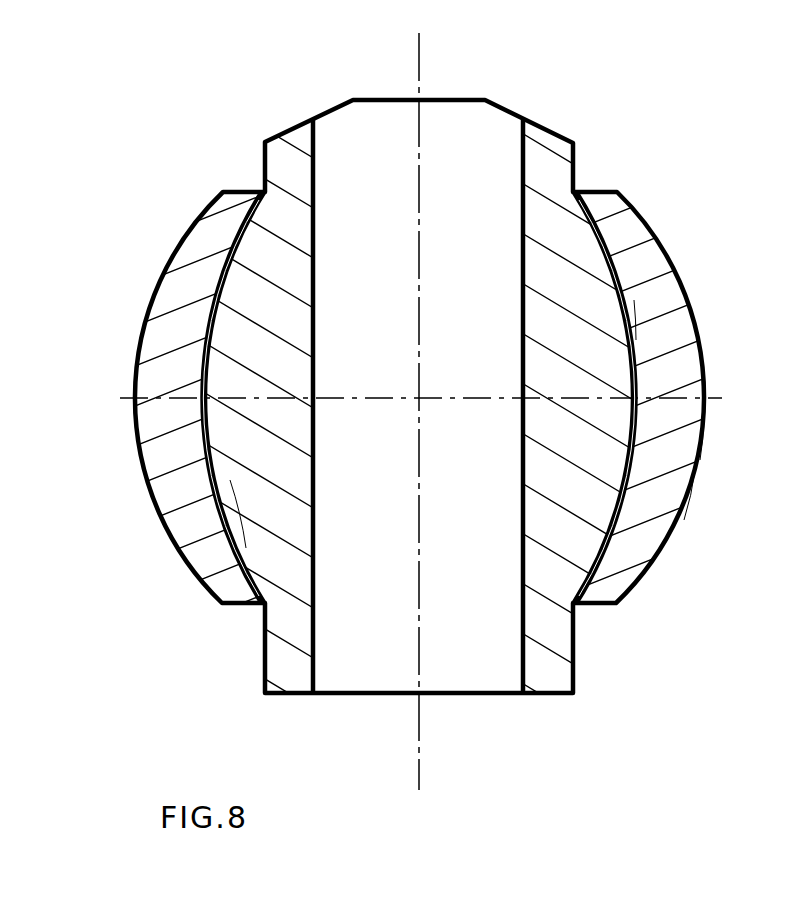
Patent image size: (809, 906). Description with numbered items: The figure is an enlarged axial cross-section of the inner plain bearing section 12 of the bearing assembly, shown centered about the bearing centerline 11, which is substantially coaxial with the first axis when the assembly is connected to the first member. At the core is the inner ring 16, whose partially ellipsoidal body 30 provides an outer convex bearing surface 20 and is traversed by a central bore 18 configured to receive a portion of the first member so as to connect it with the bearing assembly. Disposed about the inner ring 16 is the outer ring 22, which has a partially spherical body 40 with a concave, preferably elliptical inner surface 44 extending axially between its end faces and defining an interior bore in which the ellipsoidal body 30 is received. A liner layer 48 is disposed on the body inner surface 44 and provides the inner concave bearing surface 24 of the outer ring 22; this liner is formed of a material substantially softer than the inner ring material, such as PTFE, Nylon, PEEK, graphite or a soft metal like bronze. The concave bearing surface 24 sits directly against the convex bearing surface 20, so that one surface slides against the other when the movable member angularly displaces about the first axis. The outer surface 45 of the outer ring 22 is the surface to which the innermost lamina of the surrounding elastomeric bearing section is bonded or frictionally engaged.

The bearing centerline 11 is at (420, 60).
The inner plain bearing section 12 is at (136, 110).
The inner ring 16 is at (249, 121).
The central bore 18 is at (316, 667).
The outer convex bearing surface 20 is at (204, 312).
The outer ring 22 is at (709, 261).
The inner concave bearing surface 24 is at (212, 368).
The partially ellipsoidal body 30 is at (247, 541).
The partially spherical body 40 is at (706, 440).
The inner surface 44 is at (637, 330).
The outer surface 45 is at (691, 493).
The liner layer 48 is at (630, 437).